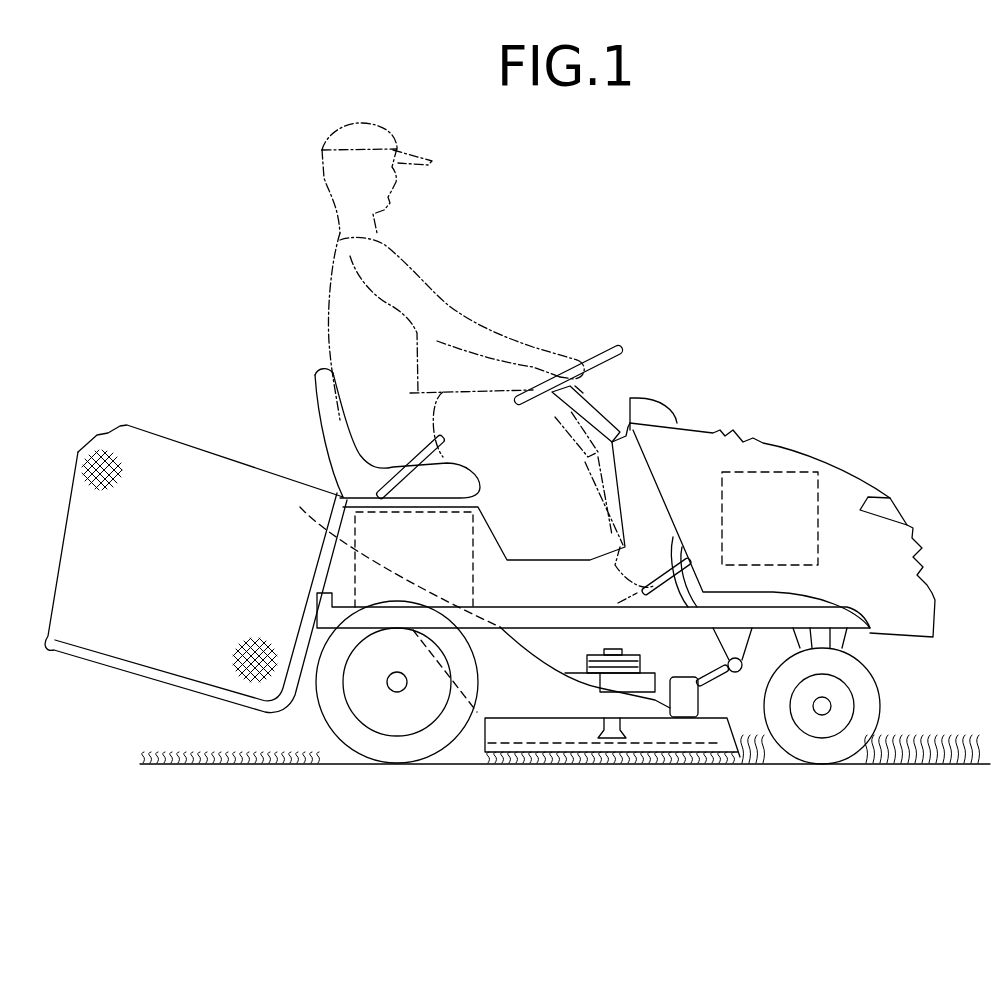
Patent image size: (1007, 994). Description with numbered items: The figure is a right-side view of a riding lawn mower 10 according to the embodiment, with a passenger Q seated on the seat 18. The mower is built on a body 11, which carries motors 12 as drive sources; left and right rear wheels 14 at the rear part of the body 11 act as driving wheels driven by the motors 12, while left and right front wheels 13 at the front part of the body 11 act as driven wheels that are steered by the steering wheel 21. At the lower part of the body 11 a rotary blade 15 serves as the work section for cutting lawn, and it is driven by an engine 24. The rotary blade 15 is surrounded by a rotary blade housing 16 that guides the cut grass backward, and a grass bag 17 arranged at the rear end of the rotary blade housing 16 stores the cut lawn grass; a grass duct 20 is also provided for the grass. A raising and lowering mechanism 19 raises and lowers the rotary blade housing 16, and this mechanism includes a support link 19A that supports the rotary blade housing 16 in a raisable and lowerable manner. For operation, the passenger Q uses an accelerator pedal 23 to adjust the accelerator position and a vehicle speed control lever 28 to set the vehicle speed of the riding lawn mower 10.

The riding lawn mower 10 is at (807, 208).
The body 11 is at (776, 622).
The motor 12 is at (355, 513).
The front wheel 13 is at (882, 693).
The rear wheel 14 is at (335, 713).
The rotary blade 15 is at (547, 763).
The rotary blade housing 16 is at (510, 730).
The grass bag 17 is at (205, 450).
The seat 18 is at (325, 372).
The raising and lowering mechanism 19 is at (725, 691).
The support link 19A is at (710, 690).
The grass duct 20 is at (502, 695).
The steering wheel 21 is at (618, 347).
The accelerator pedal 23 is at (670, 557).
The engine 24 is at (781, 470).
The vehicle speed control lever 28 is at (440, 435).
The passenger Q is at (330, 262).